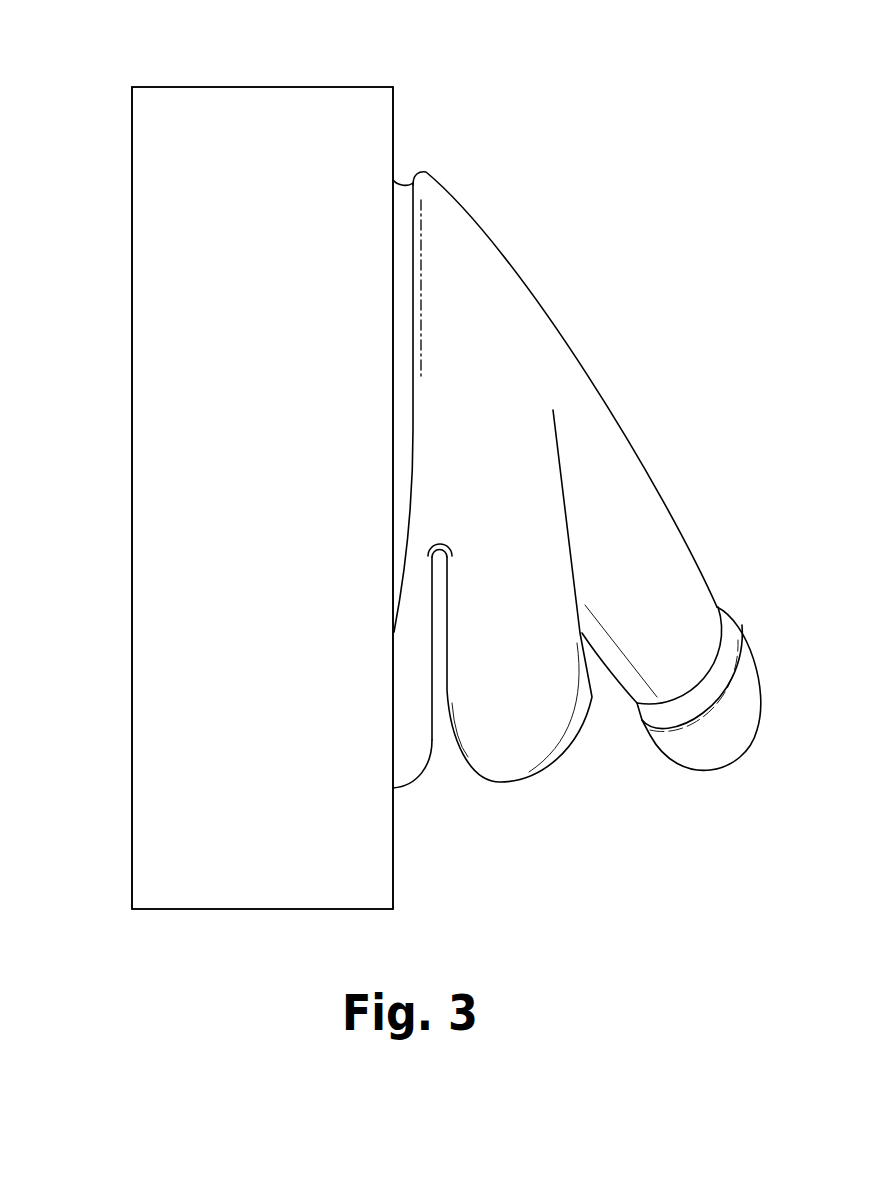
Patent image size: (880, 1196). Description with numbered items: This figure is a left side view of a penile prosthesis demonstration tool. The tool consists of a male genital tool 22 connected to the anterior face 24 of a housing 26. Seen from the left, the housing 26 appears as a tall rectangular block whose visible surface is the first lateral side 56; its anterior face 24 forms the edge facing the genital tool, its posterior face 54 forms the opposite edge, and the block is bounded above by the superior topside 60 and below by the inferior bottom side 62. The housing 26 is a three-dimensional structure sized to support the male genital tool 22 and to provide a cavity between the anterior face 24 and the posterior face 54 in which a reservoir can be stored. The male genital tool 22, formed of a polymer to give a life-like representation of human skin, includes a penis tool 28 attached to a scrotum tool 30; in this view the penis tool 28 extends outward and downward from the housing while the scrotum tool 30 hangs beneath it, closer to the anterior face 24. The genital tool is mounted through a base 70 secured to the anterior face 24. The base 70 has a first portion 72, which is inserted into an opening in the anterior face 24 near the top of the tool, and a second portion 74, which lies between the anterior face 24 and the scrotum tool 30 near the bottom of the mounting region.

The male genital tool 22 is at (449, 344).
The anterior face 24 is at (393, 115).
The housing 26 is at (230, 116).
The penis tool 28 is at (633, 591).
The scrotum tool 30 is at (502, 706).
The posterior face 54 is at (132, 372).
The first lateral side 56 is at (268, 596).
The superior topside 60 is at (318, 87).
The inferior bottom side 62 is at (247, 909).
The base 70 is at (420, 285).
The first portion 72 is at (402, 197).
The second portion 74 is at (408, 752).